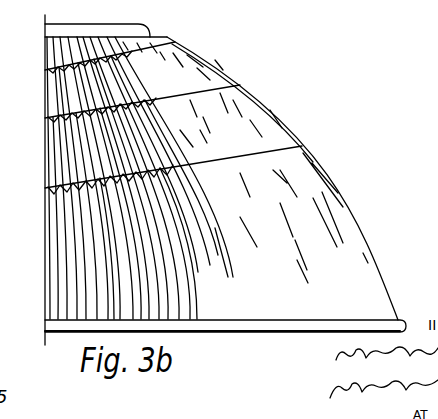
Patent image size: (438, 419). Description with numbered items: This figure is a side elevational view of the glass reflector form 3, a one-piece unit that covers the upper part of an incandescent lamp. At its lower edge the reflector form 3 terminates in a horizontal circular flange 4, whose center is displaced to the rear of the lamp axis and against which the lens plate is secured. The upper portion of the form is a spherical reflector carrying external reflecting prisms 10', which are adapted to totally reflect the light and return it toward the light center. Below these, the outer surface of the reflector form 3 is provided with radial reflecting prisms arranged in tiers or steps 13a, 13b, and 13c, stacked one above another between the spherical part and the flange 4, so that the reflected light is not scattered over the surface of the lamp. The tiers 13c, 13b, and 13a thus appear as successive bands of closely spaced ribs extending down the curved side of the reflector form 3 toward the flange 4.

The external reflecting prisms 10' is at (122, 178).
The tier of radial reflecting prisms 13c is at (134, 55).
The tier of radial reflecting prisms 13b is at (163, 116).
The tier of radial reflecting prisms 13a is at (206, 214).
The reflector form 3 is at (283, 122).
The horizontal circular flange 4 is at (399, 319).